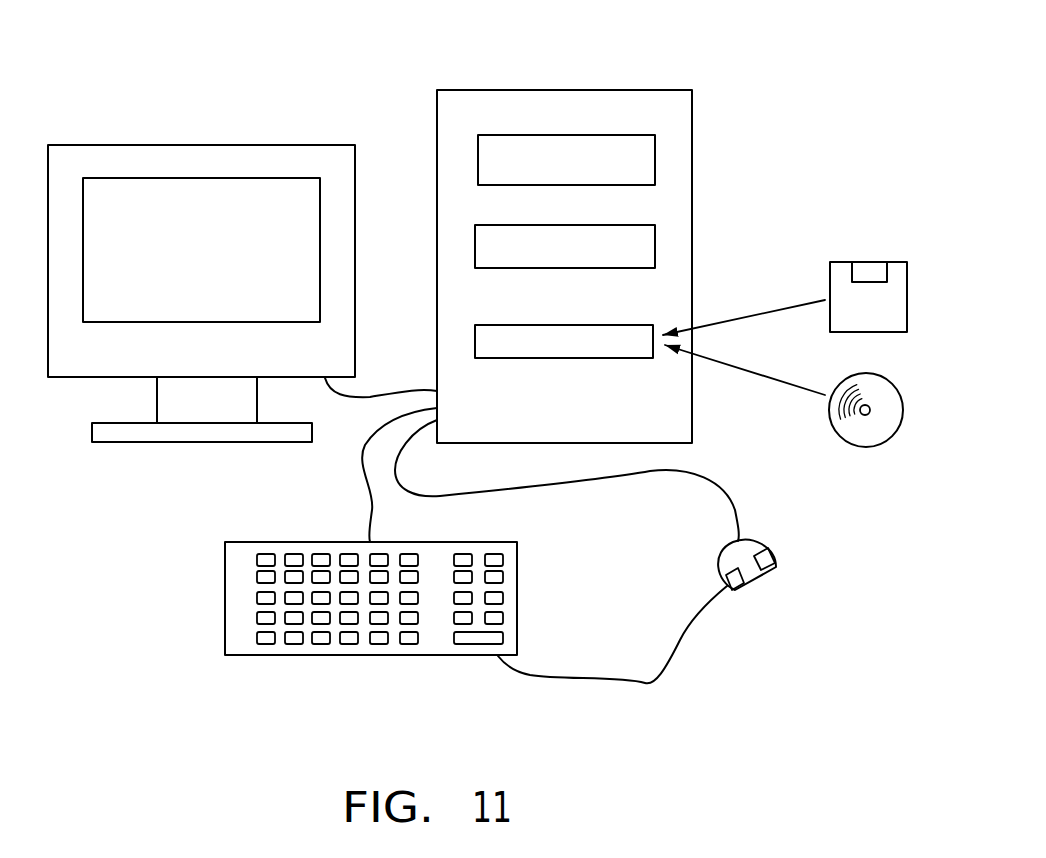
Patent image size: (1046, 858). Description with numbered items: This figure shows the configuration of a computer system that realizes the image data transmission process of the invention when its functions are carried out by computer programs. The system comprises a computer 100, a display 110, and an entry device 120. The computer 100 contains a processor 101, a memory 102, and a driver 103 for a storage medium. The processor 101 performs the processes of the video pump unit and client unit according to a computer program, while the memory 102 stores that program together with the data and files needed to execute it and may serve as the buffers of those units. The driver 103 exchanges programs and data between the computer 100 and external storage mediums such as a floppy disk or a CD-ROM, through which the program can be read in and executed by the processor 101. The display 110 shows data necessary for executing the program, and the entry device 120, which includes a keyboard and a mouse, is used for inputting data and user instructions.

The computer 100 is at (474, 88).
The processor 101 is at (553, 128).
The memory 102 is at (530, 220).
The driver for storage medium 103 is at (543, 325).
The display 110 is at (78, 145).
The entry device 120 is at (656, 683).